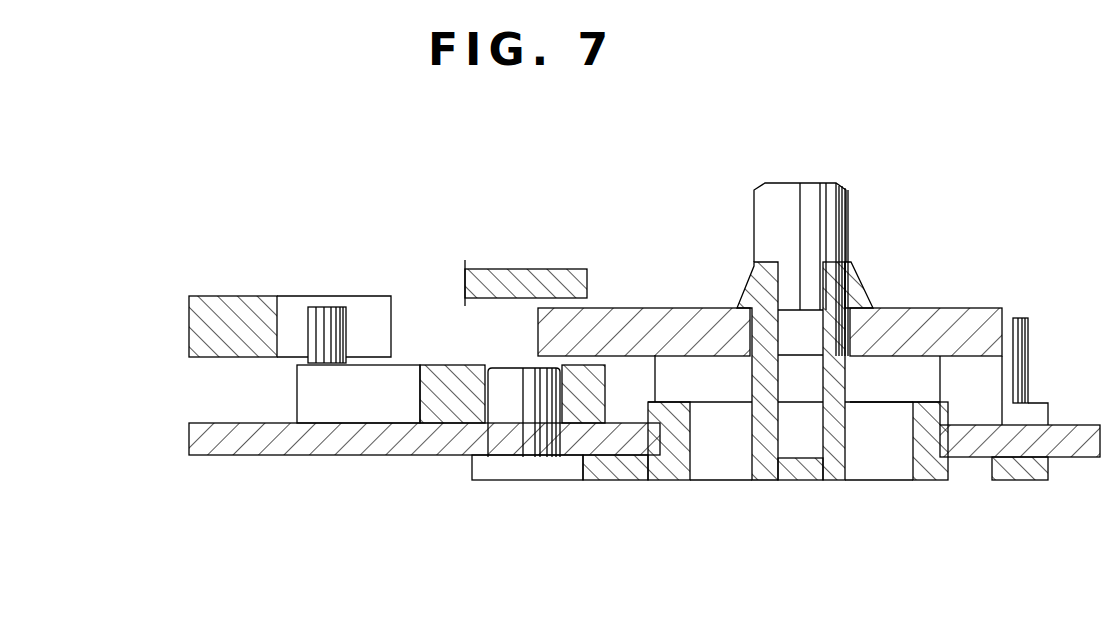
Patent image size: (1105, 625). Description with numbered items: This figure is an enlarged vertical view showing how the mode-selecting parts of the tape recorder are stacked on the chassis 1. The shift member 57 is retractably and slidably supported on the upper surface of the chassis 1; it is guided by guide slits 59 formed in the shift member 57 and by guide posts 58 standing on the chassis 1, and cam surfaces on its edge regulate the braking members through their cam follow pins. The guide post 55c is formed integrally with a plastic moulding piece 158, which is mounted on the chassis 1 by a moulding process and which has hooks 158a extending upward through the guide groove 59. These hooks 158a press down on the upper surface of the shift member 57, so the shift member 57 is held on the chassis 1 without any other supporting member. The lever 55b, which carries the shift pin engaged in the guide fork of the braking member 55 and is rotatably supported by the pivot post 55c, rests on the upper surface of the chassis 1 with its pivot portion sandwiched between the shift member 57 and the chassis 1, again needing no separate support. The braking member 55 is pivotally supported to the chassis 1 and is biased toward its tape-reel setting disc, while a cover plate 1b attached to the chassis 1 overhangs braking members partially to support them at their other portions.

The chassis 1 is at (242, 443).
The cover plate 1b is at (527, 285).
The braking member 55 is at (256, 324).
The lever 55b is at (433, 388).
The pivot post 55c is at (509, 408).
The shift member 57 is at (962, 327).
The guide post 58 is at (848, 205).
The guide slit 59 is at (805, 333).
The plastic moulding piece 158 is at (717, 481).
The hook 158a is at (848, 292).